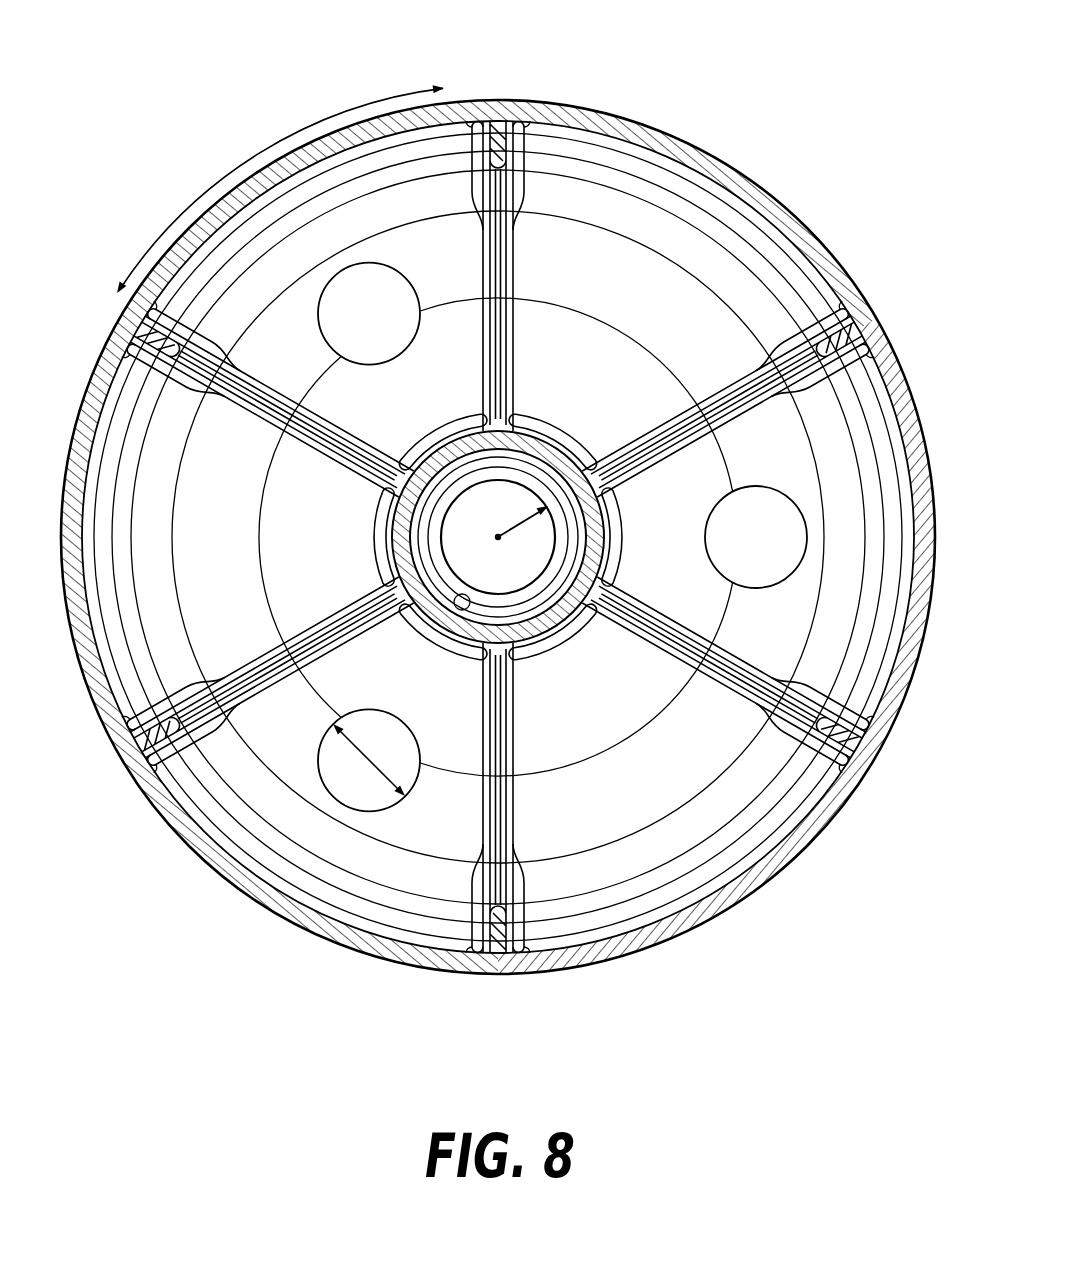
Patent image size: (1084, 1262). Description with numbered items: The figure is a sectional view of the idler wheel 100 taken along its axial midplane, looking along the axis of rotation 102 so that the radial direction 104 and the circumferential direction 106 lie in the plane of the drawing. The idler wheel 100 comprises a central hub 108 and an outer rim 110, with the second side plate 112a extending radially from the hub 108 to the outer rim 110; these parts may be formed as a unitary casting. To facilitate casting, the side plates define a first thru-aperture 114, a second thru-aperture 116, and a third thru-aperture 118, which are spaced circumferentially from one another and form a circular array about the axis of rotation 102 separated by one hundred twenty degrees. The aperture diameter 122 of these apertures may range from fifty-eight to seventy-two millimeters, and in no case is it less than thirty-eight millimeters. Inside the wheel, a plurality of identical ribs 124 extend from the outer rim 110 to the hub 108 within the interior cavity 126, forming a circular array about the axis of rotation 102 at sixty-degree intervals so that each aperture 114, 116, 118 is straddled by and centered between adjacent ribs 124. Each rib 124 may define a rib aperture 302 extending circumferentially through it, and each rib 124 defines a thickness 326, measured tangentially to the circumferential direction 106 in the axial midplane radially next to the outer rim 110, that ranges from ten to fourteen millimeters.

The idler wheel 100 is at (757, 55).
The axis of rotation 102 is at (498, 537).
The radial direction 104 is at (521, 517).
The circumferential direction 106 is at (246, 158).
The hub 108 is at (590, 600).
The outer rim 110 is at (783, 182).
The second side plate 112a is at (637, 806).
The first thru-aperture 114 is at (392, 292).
The second thru-aperture 116 is at (335, 780).
The third thru-aperture 118 is at (790, 560).
The aperture diameter 122 is at (345, 722).
The rib 124 is at (248, 406).
The interior cavity 126 is at (236, 766).
The rib aperture 302 is at (504, 268).
The thickness 326 is at (843, 322).